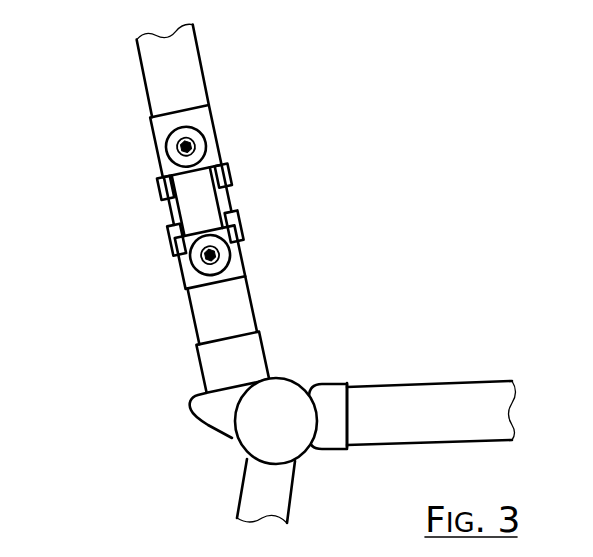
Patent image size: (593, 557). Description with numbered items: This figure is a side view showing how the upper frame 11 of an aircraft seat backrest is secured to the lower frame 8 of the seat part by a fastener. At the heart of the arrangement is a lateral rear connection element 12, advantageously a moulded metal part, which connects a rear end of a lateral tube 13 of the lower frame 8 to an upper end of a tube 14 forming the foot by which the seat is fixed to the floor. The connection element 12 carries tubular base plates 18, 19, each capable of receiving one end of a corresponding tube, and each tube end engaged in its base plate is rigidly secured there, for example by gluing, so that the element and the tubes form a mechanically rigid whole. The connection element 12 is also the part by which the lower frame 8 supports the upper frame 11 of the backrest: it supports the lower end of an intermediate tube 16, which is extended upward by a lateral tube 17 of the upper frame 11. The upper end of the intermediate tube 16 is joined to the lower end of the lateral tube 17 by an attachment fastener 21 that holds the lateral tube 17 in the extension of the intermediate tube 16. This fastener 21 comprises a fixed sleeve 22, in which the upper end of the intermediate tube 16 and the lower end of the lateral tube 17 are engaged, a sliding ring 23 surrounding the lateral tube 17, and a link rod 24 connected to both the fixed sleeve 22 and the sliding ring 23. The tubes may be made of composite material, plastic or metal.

The lower frame 8 is at (415, 330).
The upper frame 11 is at (260, 42).
The lateral rear connection element 12 is at (230, 458).
The lateral tube 13 is at (459, 393).
The tube forming the foot 14 is at (277, 492).
The intermediate tube 16 is at (207, 316).
The lateral tube of the upper frame 17 is at (167, 68).
The tubular base plate 18 is at (329, 396).
The tubular base plate 19 is at (223, 375).
The attachment fastener 21 is at (132, 172).
The fixed sleeve 22 is at (235, 268).
The sliding ring 23 is at (202, 122).
The link rod 24 is at (208, 202).